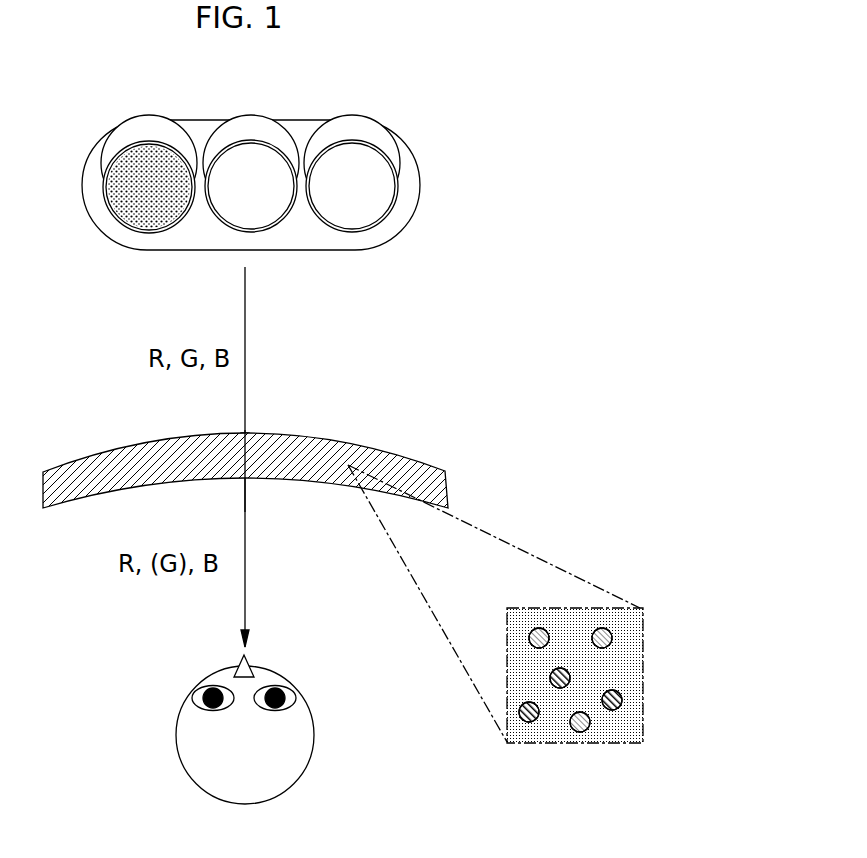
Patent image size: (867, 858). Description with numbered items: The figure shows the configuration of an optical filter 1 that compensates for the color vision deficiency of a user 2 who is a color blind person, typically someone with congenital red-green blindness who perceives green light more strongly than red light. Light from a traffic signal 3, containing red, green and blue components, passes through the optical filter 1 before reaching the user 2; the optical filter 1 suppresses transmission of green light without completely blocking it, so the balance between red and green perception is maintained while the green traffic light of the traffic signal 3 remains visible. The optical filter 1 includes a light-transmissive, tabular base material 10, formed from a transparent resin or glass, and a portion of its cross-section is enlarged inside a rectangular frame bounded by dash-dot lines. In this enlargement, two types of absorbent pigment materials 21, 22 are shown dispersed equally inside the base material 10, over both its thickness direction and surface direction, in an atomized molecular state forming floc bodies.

The optical filter 1 is at (457, 432).
The user 2 is at (190, 760).
The traffic signal 3 is at (108, 217).
The base material 10 is at (645, 657).
The absorbent pigment material 21 is at (530, 727).
The absorbent pigment material 22 is at (535, 630).